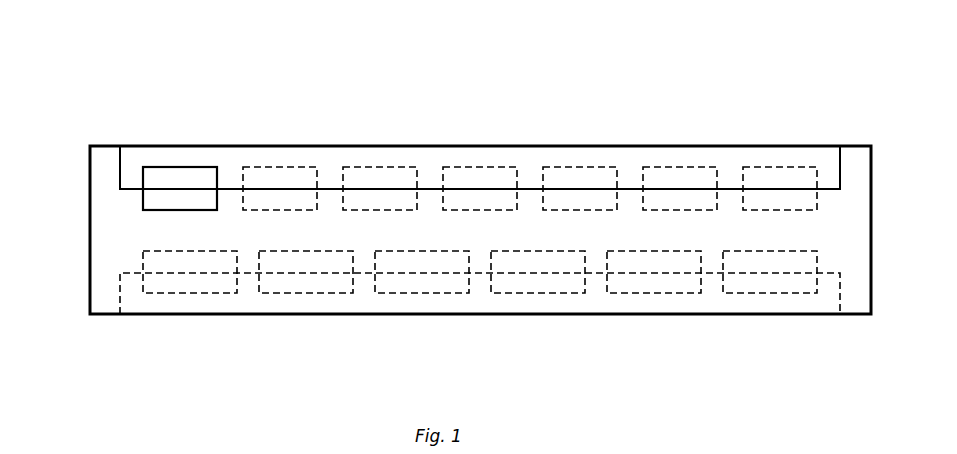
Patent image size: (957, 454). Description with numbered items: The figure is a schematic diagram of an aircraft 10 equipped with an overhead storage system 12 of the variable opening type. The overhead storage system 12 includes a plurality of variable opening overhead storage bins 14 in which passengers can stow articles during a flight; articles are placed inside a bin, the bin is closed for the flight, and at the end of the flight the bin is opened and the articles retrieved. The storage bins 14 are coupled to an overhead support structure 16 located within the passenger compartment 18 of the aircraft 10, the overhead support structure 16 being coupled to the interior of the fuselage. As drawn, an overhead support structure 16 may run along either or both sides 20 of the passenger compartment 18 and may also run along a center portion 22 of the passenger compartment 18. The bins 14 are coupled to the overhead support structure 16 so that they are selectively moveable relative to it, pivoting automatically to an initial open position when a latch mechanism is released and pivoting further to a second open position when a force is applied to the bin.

The aircraft 10 is at (168, 38).
The overhead storage system 12 is at (753, 140).
The variable opening overhead storage bin 14 is at (163, 167).
The overhead support structure 16 is at (623, 154).
The passenger compartment 18 is at (851, 240).
The sides 20 is at (289, 138).
The center portion 22 is at (132, 234).